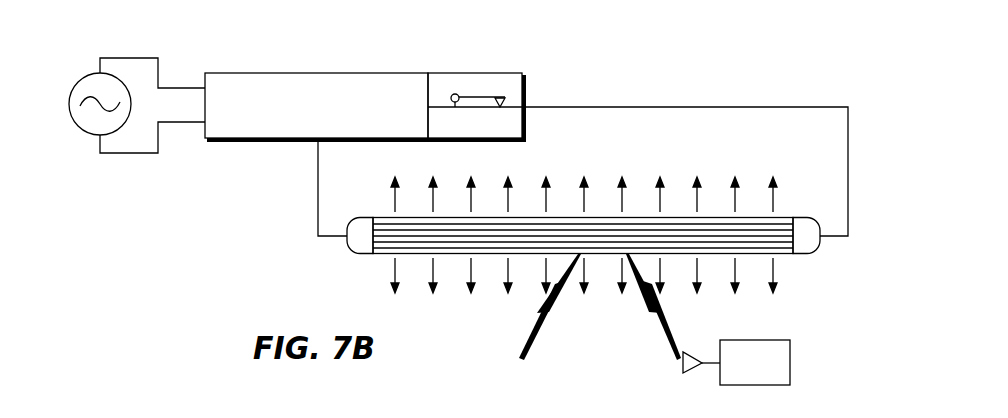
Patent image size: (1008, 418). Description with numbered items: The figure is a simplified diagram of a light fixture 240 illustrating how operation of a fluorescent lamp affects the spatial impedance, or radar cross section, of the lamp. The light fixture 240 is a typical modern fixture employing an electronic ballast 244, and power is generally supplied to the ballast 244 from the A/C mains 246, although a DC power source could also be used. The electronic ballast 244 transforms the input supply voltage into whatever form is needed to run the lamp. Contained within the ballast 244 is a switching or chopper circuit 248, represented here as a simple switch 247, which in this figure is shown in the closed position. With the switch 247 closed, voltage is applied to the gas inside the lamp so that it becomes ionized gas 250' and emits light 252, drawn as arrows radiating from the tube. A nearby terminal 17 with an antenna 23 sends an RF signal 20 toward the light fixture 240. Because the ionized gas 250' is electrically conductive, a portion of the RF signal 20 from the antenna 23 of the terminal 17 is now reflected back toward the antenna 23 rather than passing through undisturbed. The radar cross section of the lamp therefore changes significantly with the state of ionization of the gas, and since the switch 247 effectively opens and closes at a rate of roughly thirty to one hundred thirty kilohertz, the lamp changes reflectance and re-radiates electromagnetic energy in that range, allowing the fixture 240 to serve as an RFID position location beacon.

The light fixture 240 is at (722, 65).
The A/C mains 246 is at (92, 72).
The electronic ballast 244 is at (355, 72).
The switch 247 is at (487, 96).
The switching or chopper circuit 248 is at (517, 72).
The ionized gas 250' is at (583, 197).
The light 252 is at (618, 200).
The RF signal 20 is at (528, 307).
The antenna 23 is at (683, 367).
The terminal 17 is at (743, 373).